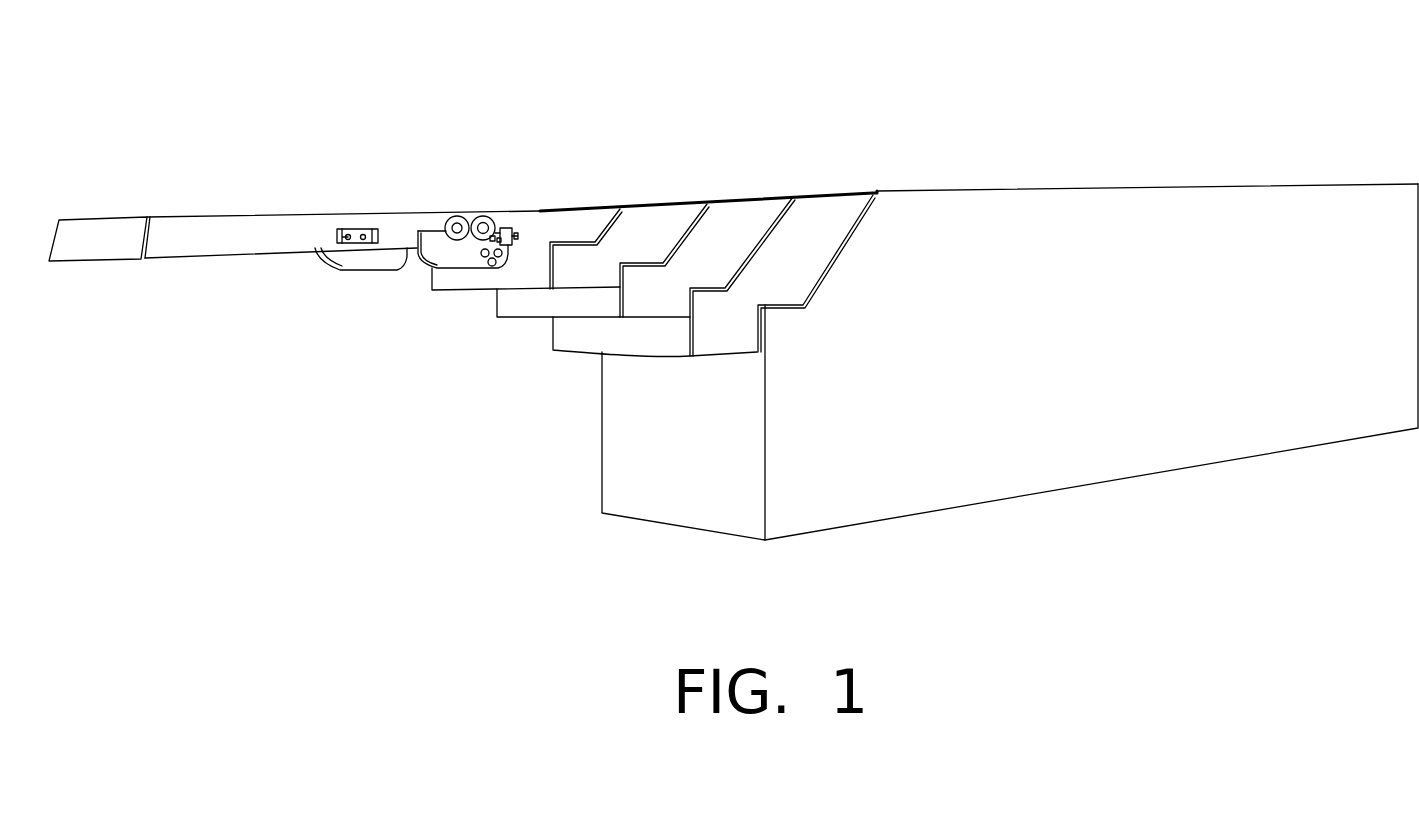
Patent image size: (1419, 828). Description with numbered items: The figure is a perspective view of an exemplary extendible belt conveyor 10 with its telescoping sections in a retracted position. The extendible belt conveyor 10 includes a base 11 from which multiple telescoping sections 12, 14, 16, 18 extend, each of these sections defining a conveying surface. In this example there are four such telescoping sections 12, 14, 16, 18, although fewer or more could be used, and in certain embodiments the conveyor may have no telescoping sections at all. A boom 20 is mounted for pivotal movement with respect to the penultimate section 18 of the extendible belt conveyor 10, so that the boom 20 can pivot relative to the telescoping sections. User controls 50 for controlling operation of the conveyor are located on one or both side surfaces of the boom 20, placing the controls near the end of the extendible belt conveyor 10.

The extendible belt conveyor 10 is at (979, 122).
The base 11 is at (1073, 187).
The telescoping section 12 is at (823, 192).
The telescoping section 14 is at (757, 193).
The telescoping section 16 is at (678, 200).
The penultimate section 18 is at (543, 207).
The boom 20 is at (200, 220).
The user controls 50 is at (367, 243).